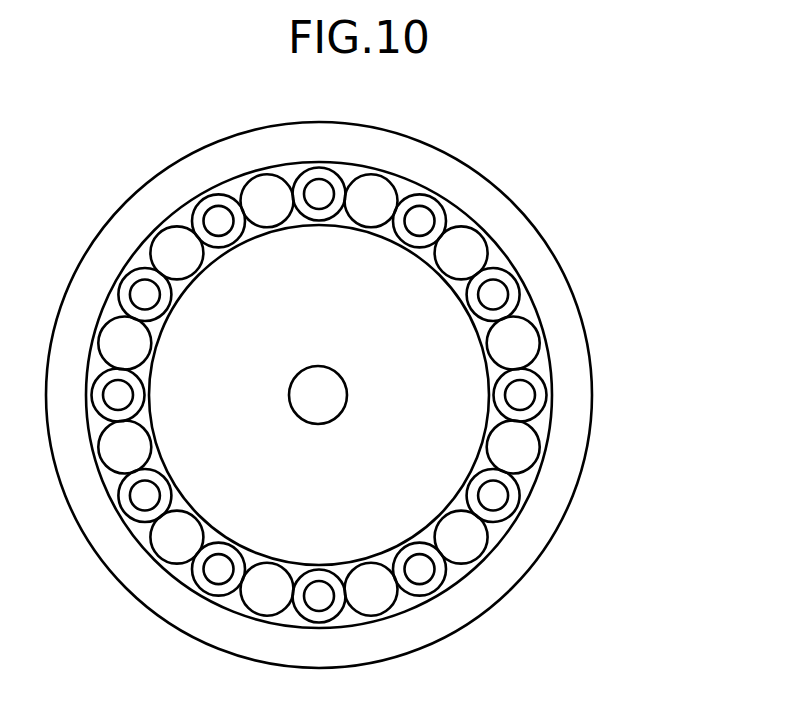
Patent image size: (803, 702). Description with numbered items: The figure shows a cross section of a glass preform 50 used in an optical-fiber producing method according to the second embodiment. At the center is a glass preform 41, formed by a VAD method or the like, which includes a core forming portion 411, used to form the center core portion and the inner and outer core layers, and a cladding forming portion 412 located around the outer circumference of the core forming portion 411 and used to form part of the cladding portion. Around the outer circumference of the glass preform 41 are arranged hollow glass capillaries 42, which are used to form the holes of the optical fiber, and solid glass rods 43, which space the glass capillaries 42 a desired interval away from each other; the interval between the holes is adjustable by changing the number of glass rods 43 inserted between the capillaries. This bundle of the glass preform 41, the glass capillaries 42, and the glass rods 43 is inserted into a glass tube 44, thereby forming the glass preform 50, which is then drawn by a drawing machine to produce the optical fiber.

The glass preform 50 is at (536, 166).
The glass tube 44 is at (522, 235).
The glass preform 41 is at (684, 232).
The core forming portion 411 is at (332, 387).
The cladding forming portion 412 is at (468, 372).
The hollow glass capillary 42 is at (547, 397).
The solid glass rod 43 is at (538, 448).